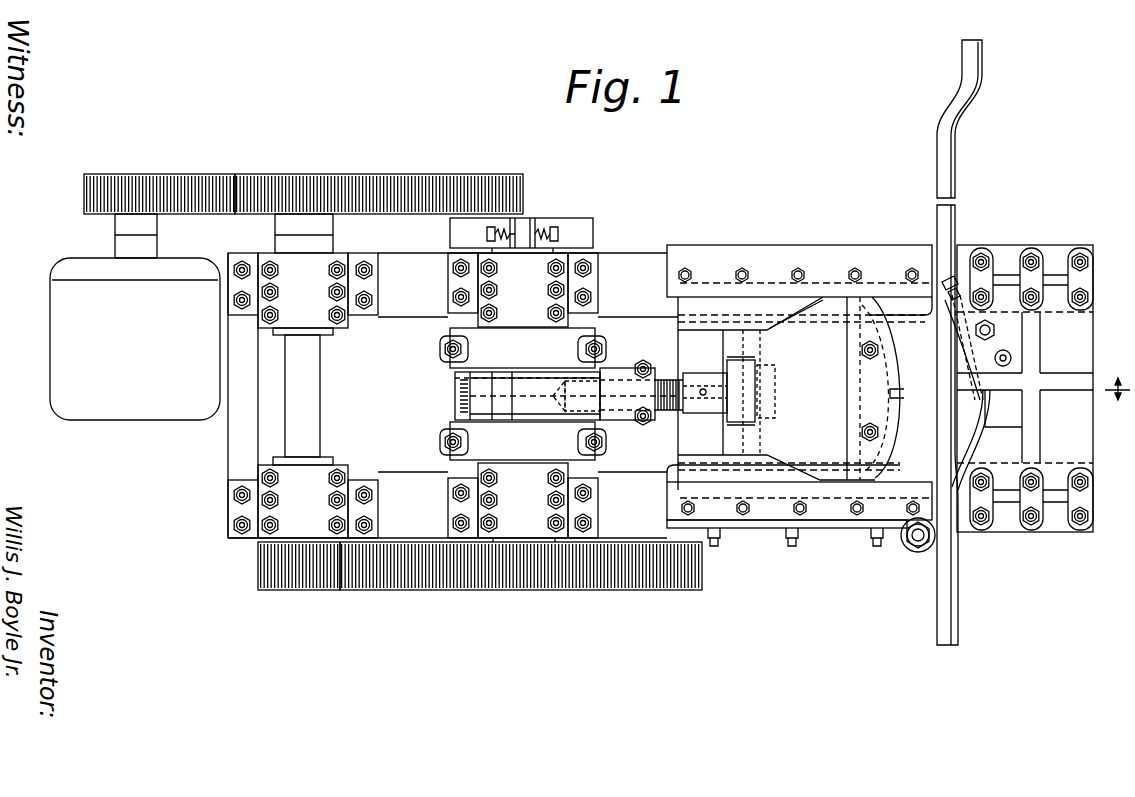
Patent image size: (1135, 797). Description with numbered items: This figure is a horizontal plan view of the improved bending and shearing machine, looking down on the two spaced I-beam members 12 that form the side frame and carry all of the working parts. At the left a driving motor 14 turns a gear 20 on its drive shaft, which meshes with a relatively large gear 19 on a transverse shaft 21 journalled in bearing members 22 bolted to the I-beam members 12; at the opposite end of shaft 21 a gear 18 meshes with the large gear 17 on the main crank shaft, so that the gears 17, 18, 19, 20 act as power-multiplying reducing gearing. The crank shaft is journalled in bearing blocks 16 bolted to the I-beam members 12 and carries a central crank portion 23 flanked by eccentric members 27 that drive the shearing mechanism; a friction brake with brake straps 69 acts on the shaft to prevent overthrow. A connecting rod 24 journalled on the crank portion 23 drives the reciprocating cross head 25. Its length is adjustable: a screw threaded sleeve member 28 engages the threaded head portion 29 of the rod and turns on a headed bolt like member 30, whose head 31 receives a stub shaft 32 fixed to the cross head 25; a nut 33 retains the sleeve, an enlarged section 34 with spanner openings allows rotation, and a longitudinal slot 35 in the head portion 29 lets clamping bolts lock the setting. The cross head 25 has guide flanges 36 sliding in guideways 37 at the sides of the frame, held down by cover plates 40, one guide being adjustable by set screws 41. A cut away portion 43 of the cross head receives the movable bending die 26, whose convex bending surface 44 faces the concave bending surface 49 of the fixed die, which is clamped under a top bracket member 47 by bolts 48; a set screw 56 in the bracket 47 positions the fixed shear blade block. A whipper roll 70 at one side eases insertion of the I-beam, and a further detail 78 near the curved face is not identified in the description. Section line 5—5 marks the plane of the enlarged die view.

The section line 5 is at (963, 216).
The I-beam members 12 is at (628, 480).
The driving motor 14 is at (134, 412).
The bearing blocks 16 is at (495, 282).
The gear 17 is at (526, 586).
The gear 18 is at (620, 270).
The gear 19 is at (392, 176).
The gear 20 is at (140, 176).
The transverse shaft 21 is at (322, 388).
The bearing members 22 is at (318, 268).
The central crank portion 23 is at (456, 396).
The connecting rod 24 is at (570, 374).
The cross head member 25 is at (824, 300).
The movable bending die 26 is at (870, 312).
The eccentric members 27 is at (522, 336).
The screw threaded sleeve member 28 is at (668, 380).
The head portion 29 is at (622, 372).
The headed bar or bolt like member 30 is at (640, 425).
The head 31 is at (730, 370).
The stub shaft 32 is at (758, 366).
The nut 33 is at (553, 398).
The enlarged section 34 is at (722, 412).
The longitudinal slot 35 is at (1004, 355).
The guide flanges 36 is at (708, 305).
The guideways 37 is at (764, 283).
The cover plates 40 is at (733, 260).
The set screws 41 is at (716, 548).
The cut away portion 43 is at (848, 406).
The convex outer bending surface 44 is at (896, 348).
The top bracket member 47 is at (1094, 338).
The bolts 48 is at (1074, 252).
The concave bending surface 49 is at (984, 432).
The set screw 56 is at (944, 283).
The brake straps 69 is at (452, 234).
The anti-friction whipper roll 70 is at (908, 548).
The notch 78 is at (903, 393).